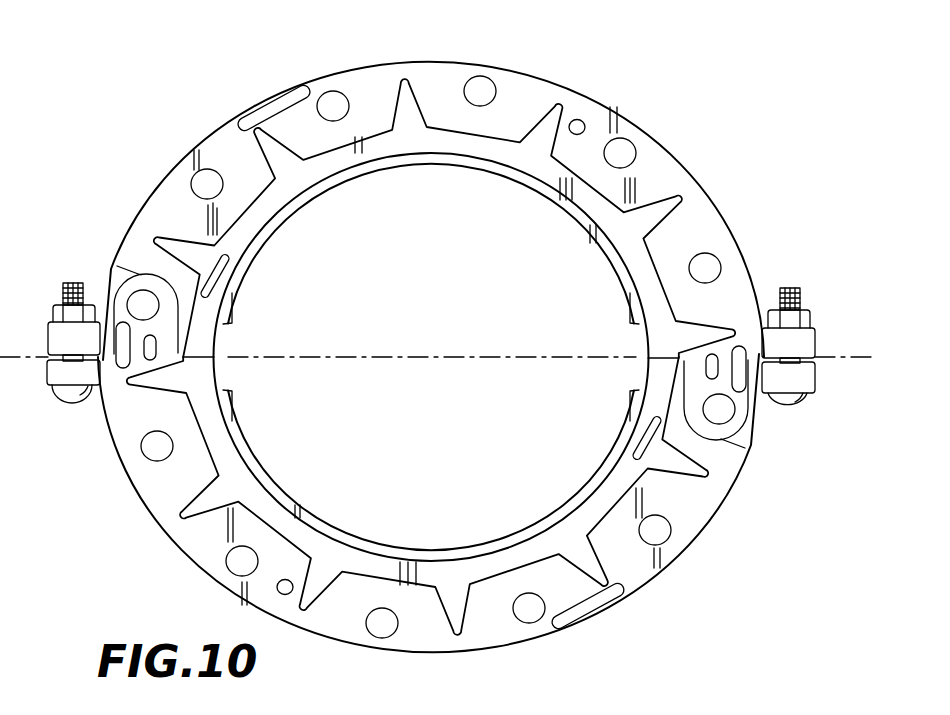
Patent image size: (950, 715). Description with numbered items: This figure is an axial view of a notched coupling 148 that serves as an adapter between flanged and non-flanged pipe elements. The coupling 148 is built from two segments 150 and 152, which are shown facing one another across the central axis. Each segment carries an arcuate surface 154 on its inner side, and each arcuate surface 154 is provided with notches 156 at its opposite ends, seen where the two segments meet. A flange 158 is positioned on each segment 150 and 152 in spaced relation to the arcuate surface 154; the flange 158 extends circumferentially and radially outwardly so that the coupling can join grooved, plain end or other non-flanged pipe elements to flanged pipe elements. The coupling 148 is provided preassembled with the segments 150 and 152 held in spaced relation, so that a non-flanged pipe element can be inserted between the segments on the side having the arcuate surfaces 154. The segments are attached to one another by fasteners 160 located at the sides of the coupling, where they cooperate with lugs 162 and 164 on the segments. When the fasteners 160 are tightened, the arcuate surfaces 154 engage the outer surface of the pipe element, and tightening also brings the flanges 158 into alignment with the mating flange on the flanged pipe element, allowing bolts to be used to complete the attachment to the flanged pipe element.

The notched coupling 148 is at (442, 359).
The segment 150 is at (471, 359).
The segment 152 is at (471, 521).
The arcuate surface 154 is at (613, 257).
The notch 156 is at (230, 345).
The flange 158 is at (515, 78).
The fastener 160 is at (787, 290).
The lug 162 is at (808, 347).
The lug 164 is at (692, 515).